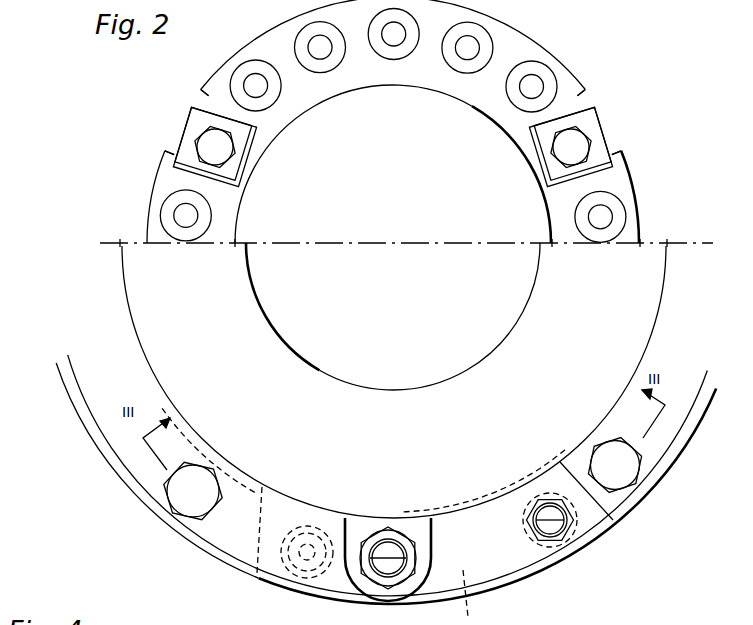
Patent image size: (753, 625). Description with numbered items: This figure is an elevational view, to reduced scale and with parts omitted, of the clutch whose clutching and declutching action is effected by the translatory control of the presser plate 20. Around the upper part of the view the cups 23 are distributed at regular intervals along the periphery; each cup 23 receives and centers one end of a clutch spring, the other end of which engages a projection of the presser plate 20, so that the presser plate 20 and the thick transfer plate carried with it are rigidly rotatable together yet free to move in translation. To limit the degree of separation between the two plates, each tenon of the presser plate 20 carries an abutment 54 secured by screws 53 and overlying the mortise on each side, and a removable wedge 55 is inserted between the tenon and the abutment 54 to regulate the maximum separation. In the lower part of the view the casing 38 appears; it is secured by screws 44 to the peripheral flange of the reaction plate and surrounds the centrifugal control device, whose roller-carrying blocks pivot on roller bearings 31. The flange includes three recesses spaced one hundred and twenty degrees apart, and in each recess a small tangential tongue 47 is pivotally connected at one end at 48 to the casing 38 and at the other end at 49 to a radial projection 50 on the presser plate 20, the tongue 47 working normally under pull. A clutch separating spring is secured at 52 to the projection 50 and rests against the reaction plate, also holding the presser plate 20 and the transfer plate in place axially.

The presser plate 20 is at (213, 552).
The cup 23 is at (254, 62).
The roller bearings 31 is at (304, 592).
The casing 38 is at (130, 458).
The screws 44 is at (182, 503).
The tangential tongue 47 is at (477, 597).
The pivotal connection to casing 48 is at (560, 543).
The pivotal connection to radial projection 49 is at (373, 583).
The radial projection 50 is at (437, 575).
The securing point of separating spring 52 is at (293, 567).
The screws 53 is at (200, 137).
The abutment 54 is at (203, 92).
The removable wedge 55 is at (173, 163).